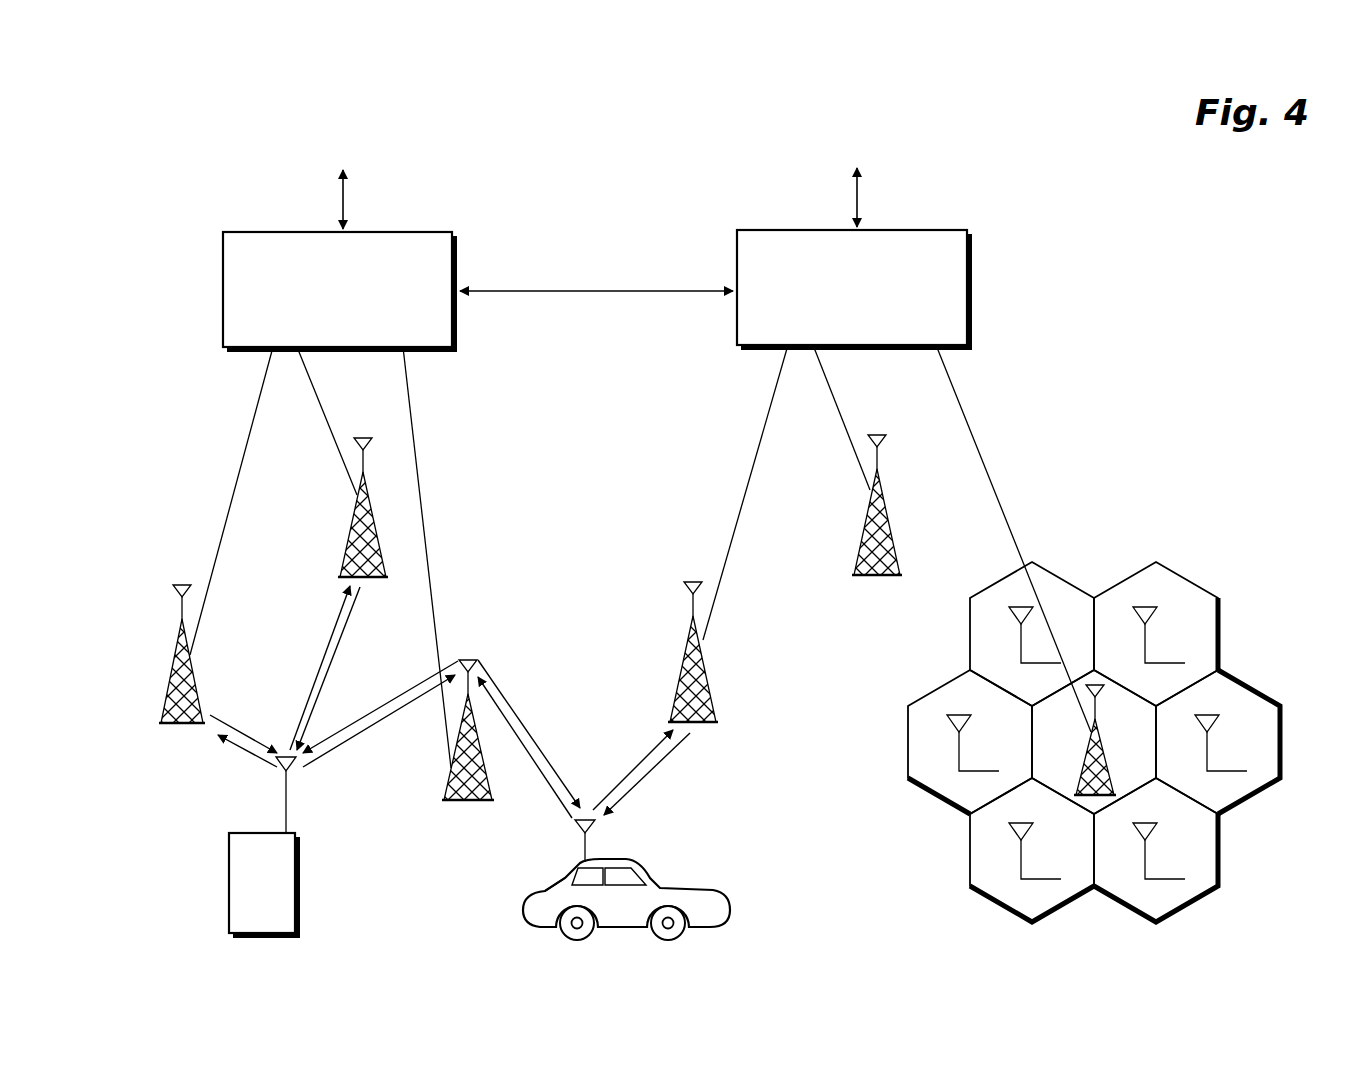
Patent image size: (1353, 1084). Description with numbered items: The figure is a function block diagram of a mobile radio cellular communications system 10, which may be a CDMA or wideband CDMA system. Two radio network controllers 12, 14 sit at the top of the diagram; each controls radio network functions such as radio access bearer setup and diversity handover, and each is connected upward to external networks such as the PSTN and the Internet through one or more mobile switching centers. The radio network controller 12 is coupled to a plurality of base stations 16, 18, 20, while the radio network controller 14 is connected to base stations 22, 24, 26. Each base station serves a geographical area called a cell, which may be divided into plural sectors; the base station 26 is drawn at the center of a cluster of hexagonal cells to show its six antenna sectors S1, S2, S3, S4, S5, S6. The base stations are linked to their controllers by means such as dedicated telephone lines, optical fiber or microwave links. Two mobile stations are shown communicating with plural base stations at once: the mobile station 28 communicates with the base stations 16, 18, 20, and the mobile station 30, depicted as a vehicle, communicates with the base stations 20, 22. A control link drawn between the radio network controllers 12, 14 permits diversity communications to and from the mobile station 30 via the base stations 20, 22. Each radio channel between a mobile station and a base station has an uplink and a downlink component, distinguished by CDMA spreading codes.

The mobile radio cellular communications system 10 is at (621, 191).
The radio network controller 12 is at (458, 250).
The radio network controller 14 is at (973, 247).
The base station 16 is at (173, 655).
The base station 18 is at (350, 517).
The base station 20 is at (447, 785).
The base station 22 is at (710, 684).
The base station 24 is at (890, 518).
The base station 26 is at (1108, 763).
The mobile station 28 is at (297, 908).
The mobile station 30 is at (663, 881).
The antenna sector S1 is at (1183, 573).
The antenna sector S2 is at (988, 583).
The antenna sector S3 is at (933, 798).
The antenna sector S4 is at (1060, 913).
The antenna sector S5 is at (1205, 905).
The antenna sector S6 is at (1255, 685).